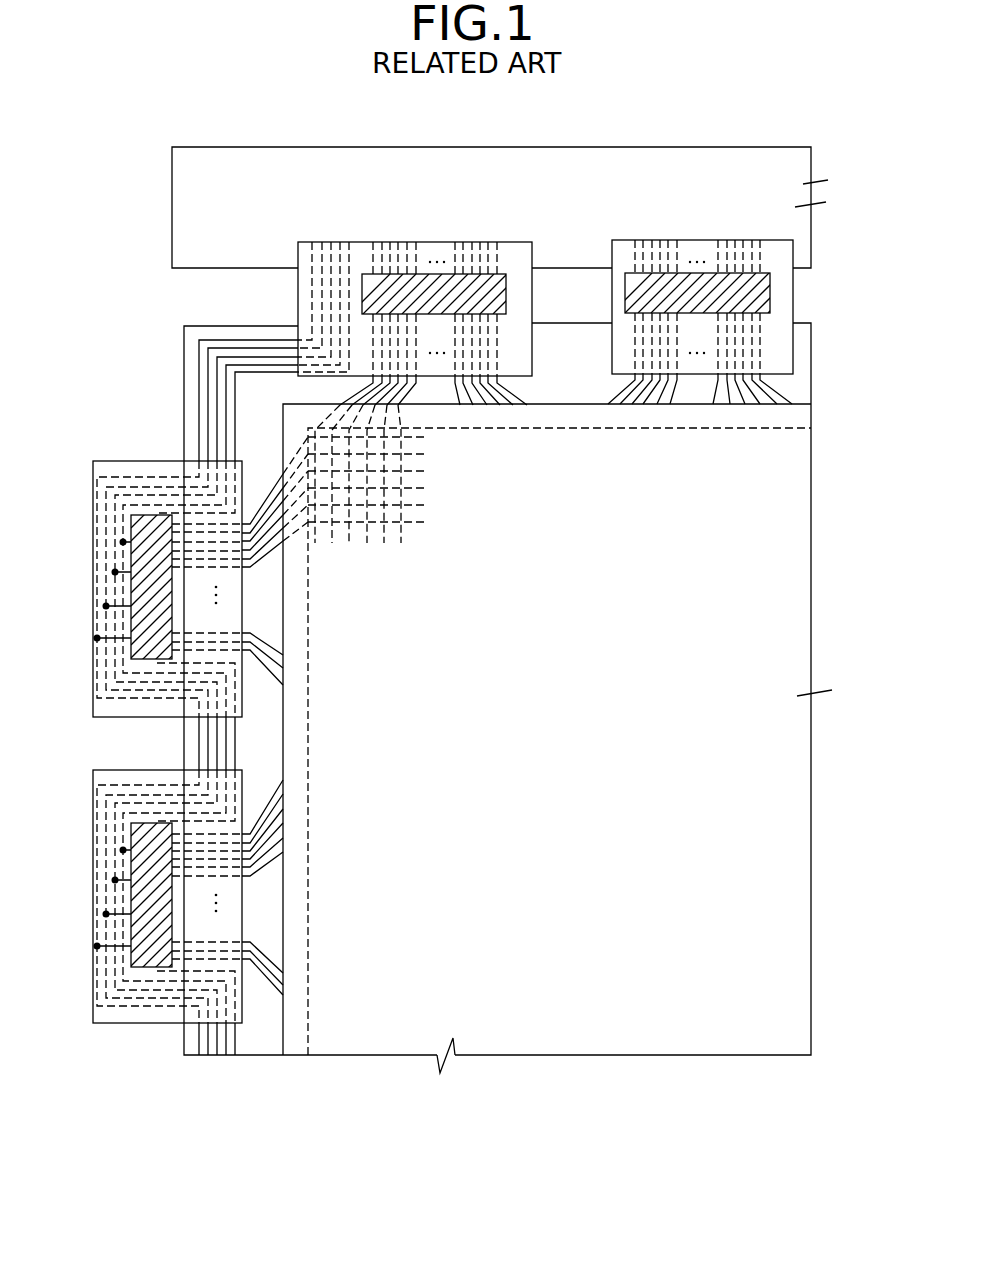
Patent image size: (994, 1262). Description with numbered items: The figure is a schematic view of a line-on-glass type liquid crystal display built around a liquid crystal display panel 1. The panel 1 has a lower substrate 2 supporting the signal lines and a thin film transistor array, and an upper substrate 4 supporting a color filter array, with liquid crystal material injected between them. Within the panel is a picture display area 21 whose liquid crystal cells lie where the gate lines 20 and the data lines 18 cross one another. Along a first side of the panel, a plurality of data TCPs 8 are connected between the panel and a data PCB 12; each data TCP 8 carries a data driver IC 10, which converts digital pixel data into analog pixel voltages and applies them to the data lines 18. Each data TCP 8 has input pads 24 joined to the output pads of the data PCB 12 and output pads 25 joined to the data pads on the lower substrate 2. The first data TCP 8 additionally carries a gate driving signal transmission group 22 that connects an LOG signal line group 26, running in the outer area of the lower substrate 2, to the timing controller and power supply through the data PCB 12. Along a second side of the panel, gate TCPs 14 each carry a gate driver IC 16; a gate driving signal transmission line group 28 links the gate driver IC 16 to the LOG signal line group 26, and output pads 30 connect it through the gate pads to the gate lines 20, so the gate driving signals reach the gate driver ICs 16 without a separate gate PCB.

The liquid crystal display panel 1 is at (828, 583).
The lower substrate 2 is at (813, 360).
The upper substrate 4 is at (810, 418).
The data TCP 8 is at (795, 316).
The data driver IC 10 is at (772, 288).
The data PCB 12 is at (812, 182).
The gate TCP 14 is at (93, 590).
The gate driver IC 16 is at (113, 572).
The data lines 18 is at (367, 538).
The gate lines 20 is at (415, 487).
The picture display area 21 is at (626, 737).
The gate driving signal transmission group 22 is at (292, 287).
The input pads 24 is at (474, 262).
The output pads 25 is at (498, 357).
The LOG signal line group 26 is at (191, 363).
The gate driving signal transmission line group 28 is at (88, 528).
The output pads 30 is at (243, 525).